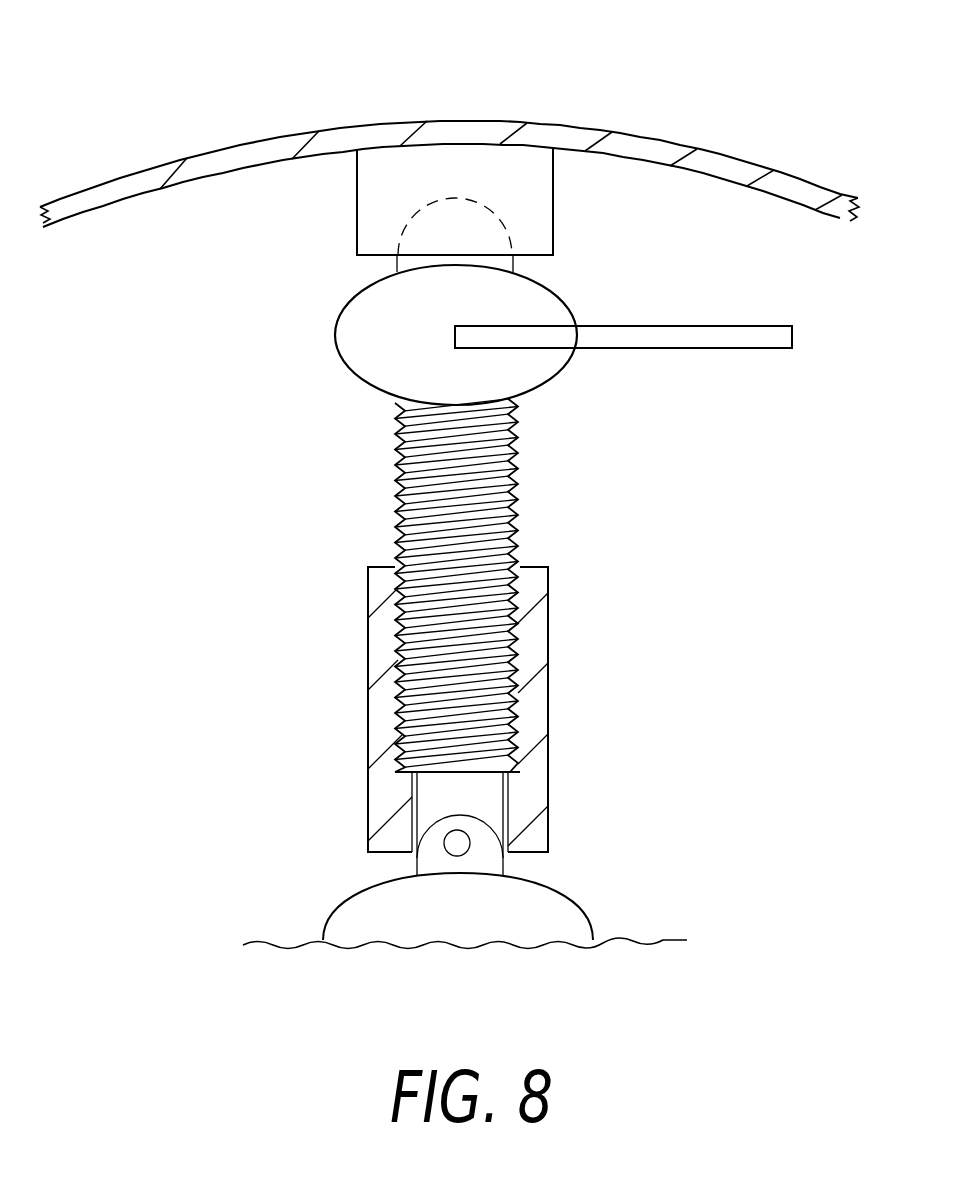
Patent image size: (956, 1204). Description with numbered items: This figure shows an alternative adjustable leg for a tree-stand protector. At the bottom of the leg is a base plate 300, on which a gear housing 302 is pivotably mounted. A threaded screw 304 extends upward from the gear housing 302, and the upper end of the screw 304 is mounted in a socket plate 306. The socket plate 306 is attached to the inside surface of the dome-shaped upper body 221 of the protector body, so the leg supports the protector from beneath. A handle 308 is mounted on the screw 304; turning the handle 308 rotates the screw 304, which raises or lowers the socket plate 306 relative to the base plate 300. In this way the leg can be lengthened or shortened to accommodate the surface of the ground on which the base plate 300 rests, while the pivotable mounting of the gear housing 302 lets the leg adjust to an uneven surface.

The upper body 221 is at (560, 132).
The base plate 300 is at (578, 902).
The gear housing 302 is at (550, 765).
The screw 304 is at (513, 527).
The socket plate 306 is at (553, 233).
The handle 308 is at (740, 330).